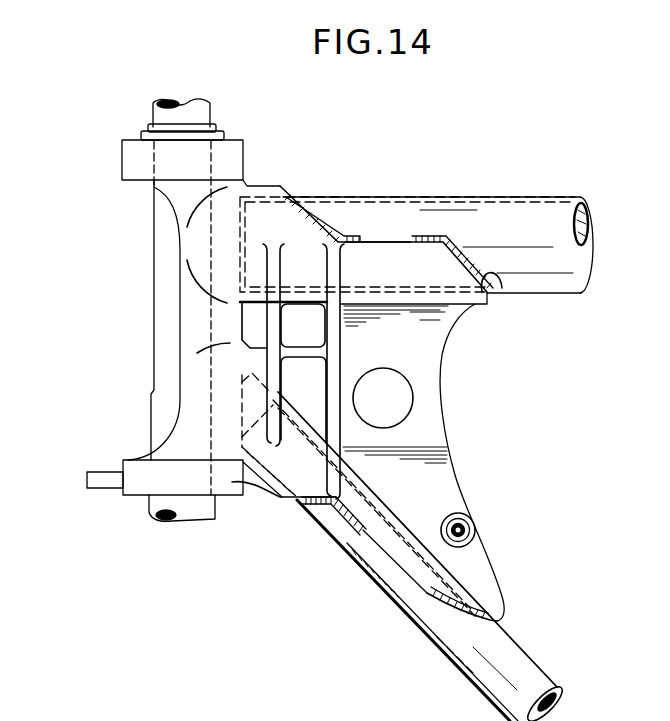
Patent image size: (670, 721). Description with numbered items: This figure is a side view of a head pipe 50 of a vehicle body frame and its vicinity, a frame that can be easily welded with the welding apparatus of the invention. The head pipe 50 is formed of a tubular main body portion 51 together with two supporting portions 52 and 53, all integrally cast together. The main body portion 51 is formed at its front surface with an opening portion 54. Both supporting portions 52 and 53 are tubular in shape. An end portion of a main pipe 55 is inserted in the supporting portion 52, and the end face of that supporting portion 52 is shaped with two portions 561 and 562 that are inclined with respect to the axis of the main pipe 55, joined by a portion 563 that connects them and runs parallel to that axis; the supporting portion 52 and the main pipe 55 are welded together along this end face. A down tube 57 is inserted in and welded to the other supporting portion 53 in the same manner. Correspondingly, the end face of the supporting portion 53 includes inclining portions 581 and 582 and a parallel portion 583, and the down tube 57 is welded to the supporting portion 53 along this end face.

The head pipe 50 is at (100, 151).
The tubular main body portion 51 is at (197, 322).
The supporting portion 52 is at (290, 232).
The supporting portion 53 is at (302, 482).
The opening portion 54 is at (180, 277).
The main pipe 55 is at (533, 199).
The inclined portion of end face 561 is at (328, 226).
The inclined portion of end face 562 is at (497, 273).
The parallel portion of end face 563 is at (405, 240).
The down tube 57 is at (517, 660).
The inclining portion of end face 581 is at (330, 507).
The inclining portion of end face 582 is at (463, 627).
The parallel portion of end face 583 is at (397, 572).